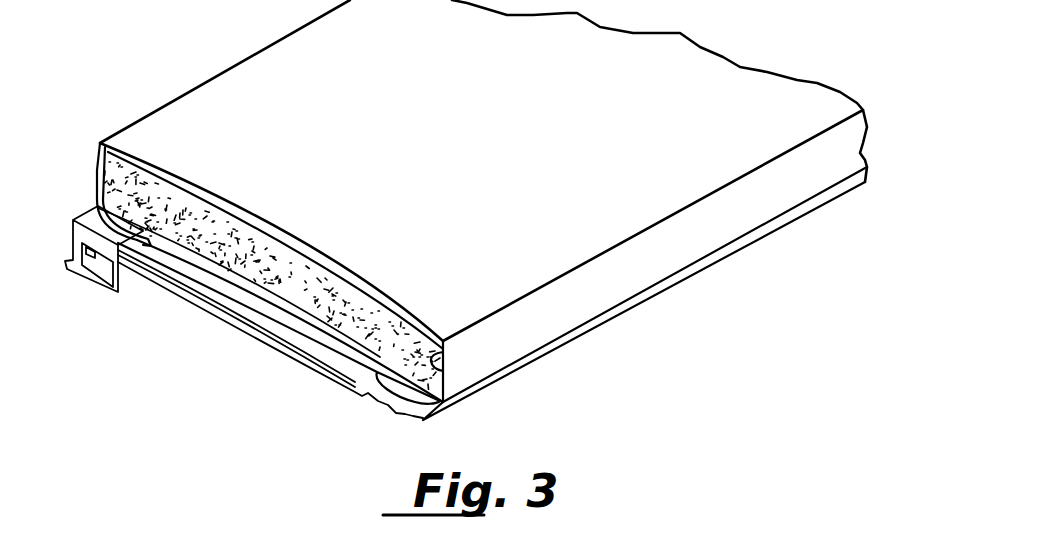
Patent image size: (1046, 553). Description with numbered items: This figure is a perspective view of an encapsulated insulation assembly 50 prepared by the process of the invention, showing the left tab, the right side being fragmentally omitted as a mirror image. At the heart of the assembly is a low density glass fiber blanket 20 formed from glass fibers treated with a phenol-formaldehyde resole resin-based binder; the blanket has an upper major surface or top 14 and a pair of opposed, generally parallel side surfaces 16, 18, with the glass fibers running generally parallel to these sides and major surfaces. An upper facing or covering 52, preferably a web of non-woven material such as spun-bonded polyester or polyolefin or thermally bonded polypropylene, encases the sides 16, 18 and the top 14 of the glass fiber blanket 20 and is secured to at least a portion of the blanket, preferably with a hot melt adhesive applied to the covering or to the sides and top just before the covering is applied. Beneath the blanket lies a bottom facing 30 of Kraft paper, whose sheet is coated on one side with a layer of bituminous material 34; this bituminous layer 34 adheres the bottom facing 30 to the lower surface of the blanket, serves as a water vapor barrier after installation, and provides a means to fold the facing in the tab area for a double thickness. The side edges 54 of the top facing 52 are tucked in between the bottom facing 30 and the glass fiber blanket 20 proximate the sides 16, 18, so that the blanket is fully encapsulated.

The encapsulated insulation assembly 50 is at (224, 74).
The top facing 52 is at (498, 138).
The side surface 16 is at (446, 380).
The side surface 18 is at (95, 177).
The upper major surface 14 is at (282, 303).
The glass fiber blanket 20 is at (367, 326).
The bituminous layer 34 is at (213, 283).
The bottom facing 30 is at (672, 282).
The side edges 54 is at (127, 232).